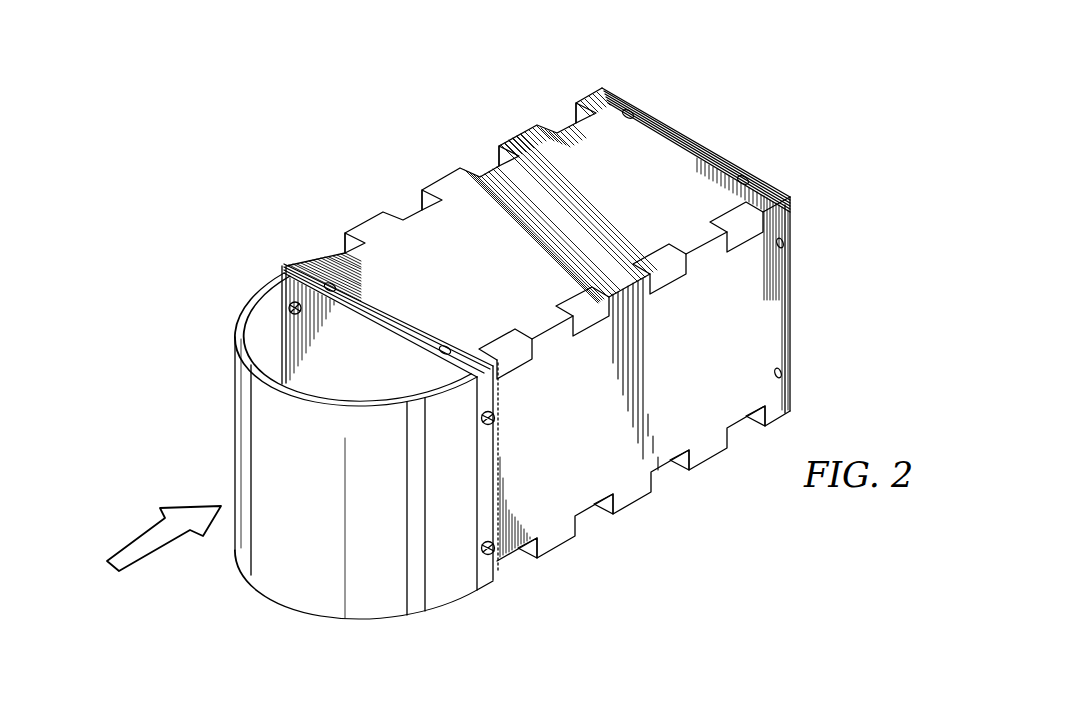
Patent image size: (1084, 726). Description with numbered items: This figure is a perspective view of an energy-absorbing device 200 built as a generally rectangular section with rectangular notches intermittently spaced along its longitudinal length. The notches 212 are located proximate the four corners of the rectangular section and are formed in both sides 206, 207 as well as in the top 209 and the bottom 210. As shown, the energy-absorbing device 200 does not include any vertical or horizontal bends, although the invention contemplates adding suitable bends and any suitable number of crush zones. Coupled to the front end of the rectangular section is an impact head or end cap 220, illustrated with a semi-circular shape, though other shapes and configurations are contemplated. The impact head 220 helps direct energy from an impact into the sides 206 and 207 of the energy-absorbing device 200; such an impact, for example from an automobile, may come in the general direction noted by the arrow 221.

The energy-absorbing device 200 is at (406, 116).
The side 206 is at (789, 311).
The side 207 is at (384, 240).
The top 209 is at (694, 150).
The bottom 210 is at (697, 443).
The notches 212 is at (561, 122).
The impact head 220 is at (236, 418).
The arrow 221 is at (143, 543).